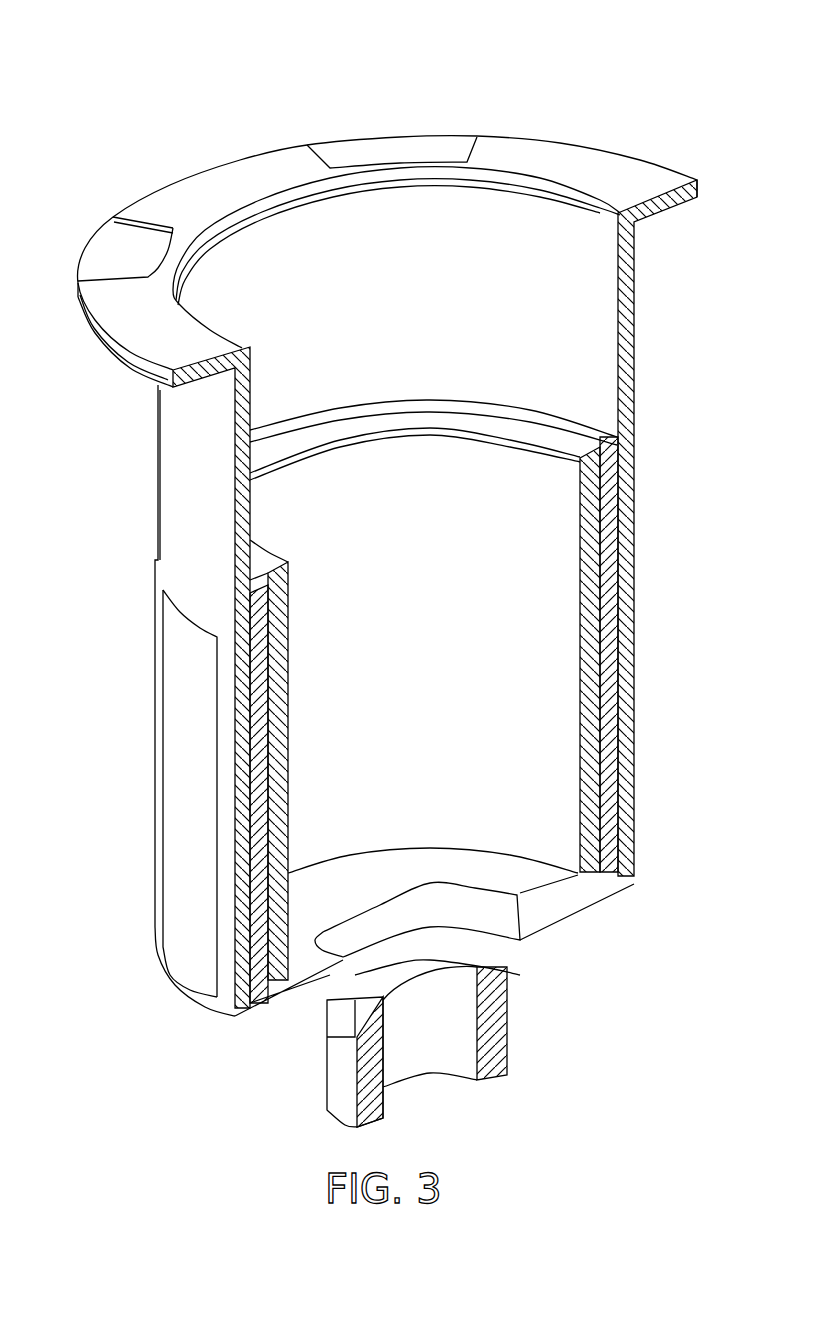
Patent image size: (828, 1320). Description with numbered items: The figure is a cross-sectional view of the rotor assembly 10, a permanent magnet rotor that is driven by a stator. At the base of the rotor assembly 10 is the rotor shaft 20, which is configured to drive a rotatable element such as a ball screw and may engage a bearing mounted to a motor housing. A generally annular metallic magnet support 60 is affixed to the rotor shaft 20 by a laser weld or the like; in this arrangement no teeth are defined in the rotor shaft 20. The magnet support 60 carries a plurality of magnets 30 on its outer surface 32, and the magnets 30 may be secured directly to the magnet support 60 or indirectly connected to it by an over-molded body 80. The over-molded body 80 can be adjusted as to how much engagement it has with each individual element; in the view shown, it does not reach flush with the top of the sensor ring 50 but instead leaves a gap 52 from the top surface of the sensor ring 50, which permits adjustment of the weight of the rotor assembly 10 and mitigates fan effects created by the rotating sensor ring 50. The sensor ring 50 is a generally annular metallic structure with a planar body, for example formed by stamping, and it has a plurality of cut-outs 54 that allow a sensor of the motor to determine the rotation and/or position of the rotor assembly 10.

The rotor assembly 10 is at (100, 70).
The rotor shaft 20 is at (498, 1030).
The magnets 30 is at (175, 785).
The outer surface 32 is at (175, 548).
The sensor ring 50 is at (580, 165).
The gap 52 is at (130, 212).
The cut-outs 54 is at (358, 160).
The magnet support 60 is at (612, 648).
The over-molded body 80 is at (108, 252).